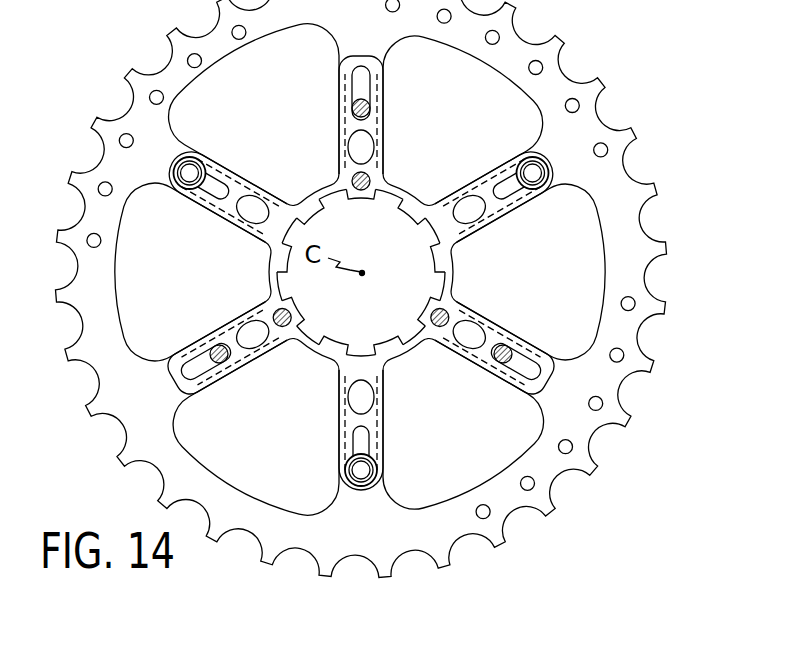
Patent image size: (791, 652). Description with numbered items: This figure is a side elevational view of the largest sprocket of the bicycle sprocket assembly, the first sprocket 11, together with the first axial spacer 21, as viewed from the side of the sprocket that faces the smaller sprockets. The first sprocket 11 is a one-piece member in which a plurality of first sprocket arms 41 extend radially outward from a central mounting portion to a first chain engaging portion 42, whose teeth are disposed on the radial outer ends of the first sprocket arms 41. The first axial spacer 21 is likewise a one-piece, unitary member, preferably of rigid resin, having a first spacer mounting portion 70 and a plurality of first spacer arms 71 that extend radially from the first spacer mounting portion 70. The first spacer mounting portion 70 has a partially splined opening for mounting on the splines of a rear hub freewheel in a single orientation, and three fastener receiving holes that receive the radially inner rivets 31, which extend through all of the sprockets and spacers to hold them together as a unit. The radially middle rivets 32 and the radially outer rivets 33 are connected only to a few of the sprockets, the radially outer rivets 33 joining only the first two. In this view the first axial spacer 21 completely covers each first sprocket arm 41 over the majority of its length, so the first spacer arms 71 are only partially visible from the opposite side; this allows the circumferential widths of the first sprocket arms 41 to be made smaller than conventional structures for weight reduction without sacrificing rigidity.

The first sprocket 11 is at (127, 112).
The first axial spacer 21 is at (338, 124).
The radially inner rivets 31 is at (362, 196).
The radially middle rivets 32 is at (364, 106).
The radially outer rivets 33 is at (174, 170).
The first sprocket arms 41 is at (362, 497).
The first chain engaging portion 42 is at (617, 222).
The first spacer mounting portion 70 is at (455, 260).
The first spacer arms 71 is at (374, 420).